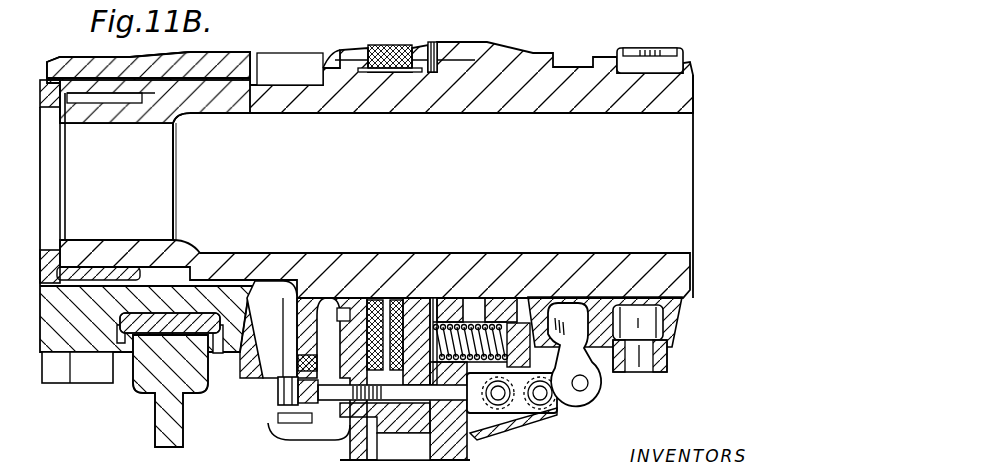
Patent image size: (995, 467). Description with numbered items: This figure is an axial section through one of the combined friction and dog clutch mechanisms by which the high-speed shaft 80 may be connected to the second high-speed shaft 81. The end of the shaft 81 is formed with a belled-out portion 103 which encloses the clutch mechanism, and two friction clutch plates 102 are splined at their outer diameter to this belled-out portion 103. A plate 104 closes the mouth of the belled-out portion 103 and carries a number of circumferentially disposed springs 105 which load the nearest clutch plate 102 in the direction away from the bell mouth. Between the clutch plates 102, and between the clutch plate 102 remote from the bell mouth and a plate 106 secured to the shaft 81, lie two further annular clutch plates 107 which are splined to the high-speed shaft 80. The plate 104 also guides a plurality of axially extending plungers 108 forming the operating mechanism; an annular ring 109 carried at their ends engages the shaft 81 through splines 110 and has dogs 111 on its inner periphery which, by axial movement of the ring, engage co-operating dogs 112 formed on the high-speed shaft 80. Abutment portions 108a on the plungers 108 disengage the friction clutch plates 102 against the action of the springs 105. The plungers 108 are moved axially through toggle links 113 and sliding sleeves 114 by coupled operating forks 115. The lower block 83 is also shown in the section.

The high-speed shaft 80 is at (621, 100).
The second high-speed shaft 81 is at (203, 307).
The lower block 83 is at (70, 355).
The friction clutch plates 102 is at (422, 45).
The belled-out portion 103 is at (283, 435).
The plate 104 is at (335, 3).
The springs 105 is at (487, 320).
The plate 106 is at (345, 310).
The annular clutch plates 107 is at (400, 70).
The plungers 108 is at (495, 433).
The abutment portions 108a is at (430, 5).
The annular ring 109 is at (290, 425).
The splines 110 is at (307, 427).
The dogs 111 is at (284, 389).
The co-operating dogs 112 is at (298, 362).
The toggle links 113 is at (568, 408).
The sliding sleeves 114 is at (595, 298).
The operating forks 115 is at (615, 372).